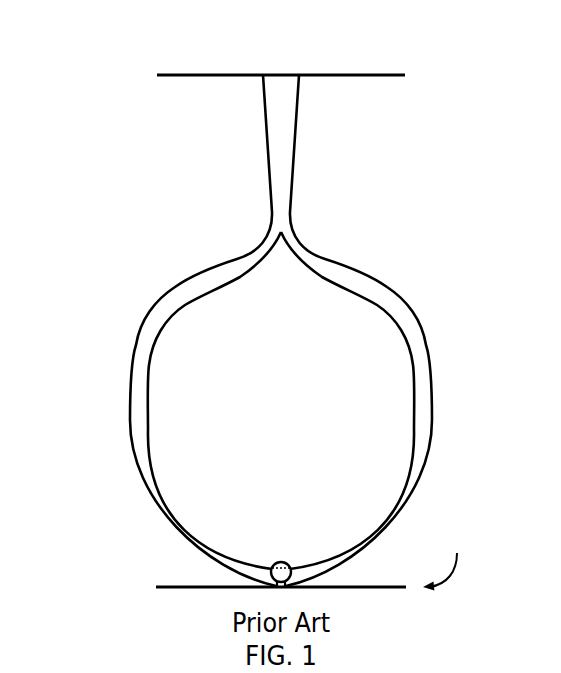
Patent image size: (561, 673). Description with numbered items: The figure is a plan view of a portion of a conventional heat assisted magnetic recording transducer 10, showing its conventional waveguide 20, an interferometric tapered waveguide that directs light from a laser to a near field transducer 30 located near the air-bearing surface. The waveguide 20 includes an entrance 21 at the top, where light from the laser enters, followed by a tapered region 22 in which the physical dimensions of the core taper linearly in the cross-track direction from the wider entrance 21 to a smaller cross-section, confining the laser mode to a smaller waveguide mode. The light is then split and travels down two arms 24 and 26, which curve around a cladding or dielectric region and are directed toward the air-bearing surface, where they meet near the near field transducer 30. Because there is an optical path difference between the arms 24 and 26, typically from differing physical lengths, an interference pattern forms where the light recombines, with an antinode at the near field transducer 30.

The heat assisted magnetic recording (HAMR) transducer 10 is at (37, 50).
The waveguide 20 is at (342, 216).
The entrance 21 is at (284, 70).
The tapered region 22 is at (267, 145).
The arm 24 is at (206, 268).
The arm 26 is at (370, 277).
The near field transducer (NFT) 30 is at (281, 562).